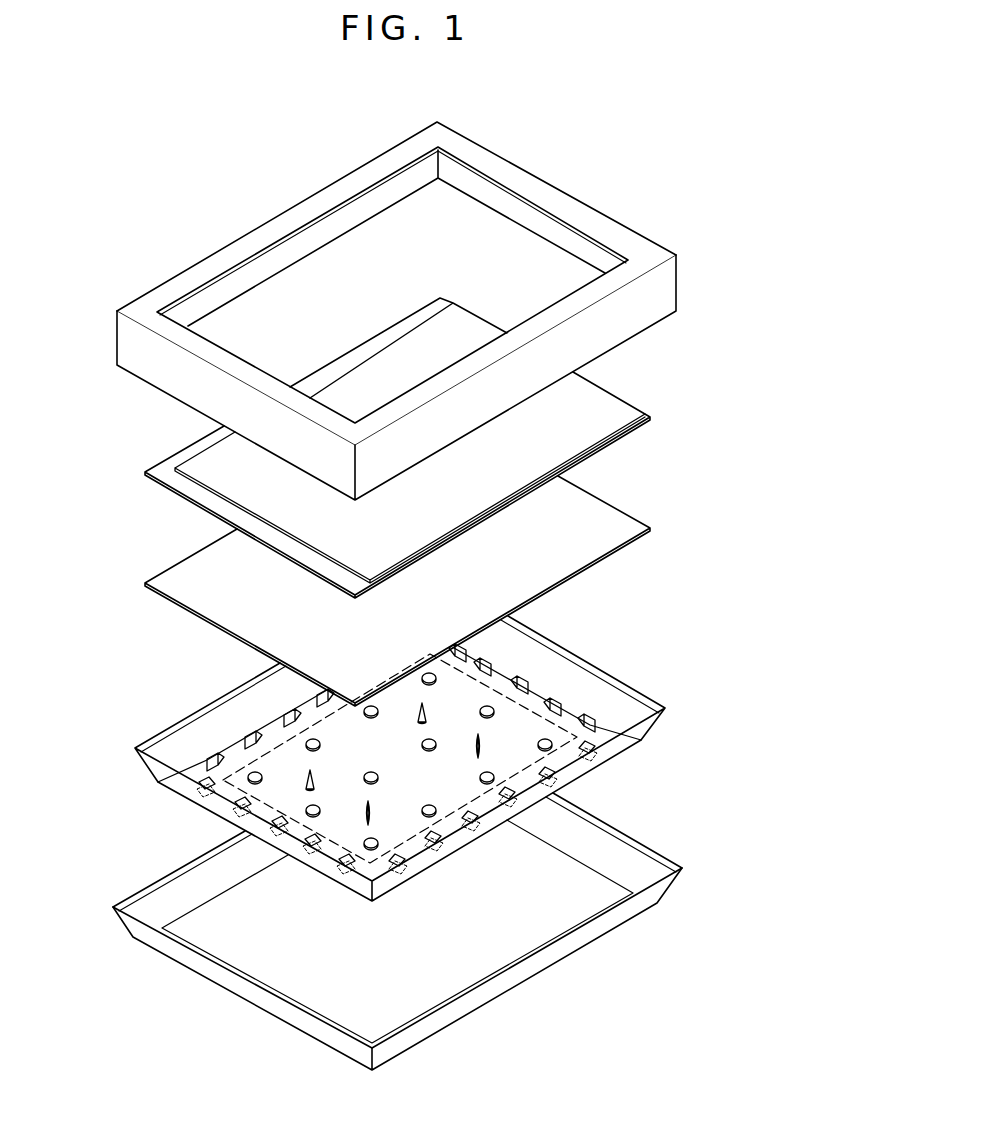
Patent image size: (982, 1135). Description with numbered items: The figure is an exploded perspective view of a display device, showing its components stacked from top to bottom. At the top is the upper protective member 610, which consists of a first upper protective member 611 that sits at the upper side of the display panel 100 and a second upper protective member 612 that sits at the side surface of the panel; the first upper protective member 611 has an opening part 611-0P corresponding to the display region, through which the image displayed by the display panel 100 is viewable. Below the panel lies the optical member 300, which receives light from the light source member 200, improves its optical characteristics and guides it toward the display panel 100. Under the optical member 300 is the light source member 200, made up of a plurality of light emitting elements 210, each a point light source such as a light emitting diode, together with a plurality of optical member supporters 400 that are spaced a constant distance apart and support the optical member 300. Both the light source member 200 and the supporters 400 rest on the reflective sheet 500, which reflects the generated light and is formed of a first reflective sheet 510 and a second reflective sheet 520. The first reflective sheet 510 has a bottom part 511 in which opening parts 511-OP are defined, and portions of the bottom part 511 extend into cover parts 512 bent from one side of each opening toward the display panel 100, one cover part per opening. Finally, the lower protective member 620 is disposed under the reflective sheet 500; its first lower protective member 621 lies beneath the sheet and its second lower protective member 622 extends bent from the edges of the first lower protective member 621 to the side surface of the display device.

The display panel 100 is at (633, 413).
The light source member 200 is at (450, 731).
The light emitting element 210 is at (487, 704).
The optical member 300 is at (632, 525).
The optical member supporter 400 is at (482, 745).
The reflective sheet 500 is at (364, 750).
The first reflective sheet 510 is at (369, 755).
The bottom part 511 is at (270, 730).
The opening part 511-OP is at (158, 773).
The cover part 512 is at (292, 718).
The second reflective sheet 520 is at (183, 740).
The upper protective member 610 is at (457, 311).
The first upper protective member 611 is at (431, 283).
The opening part 611-0P is at (514, 249).
The second upper protective member 612 is at (668, 290).
The lower protective member 620 is at (418, 931).
The first lower protective member 621 is at (567, 912).
The second lower protective member 622 is at (563, 950).